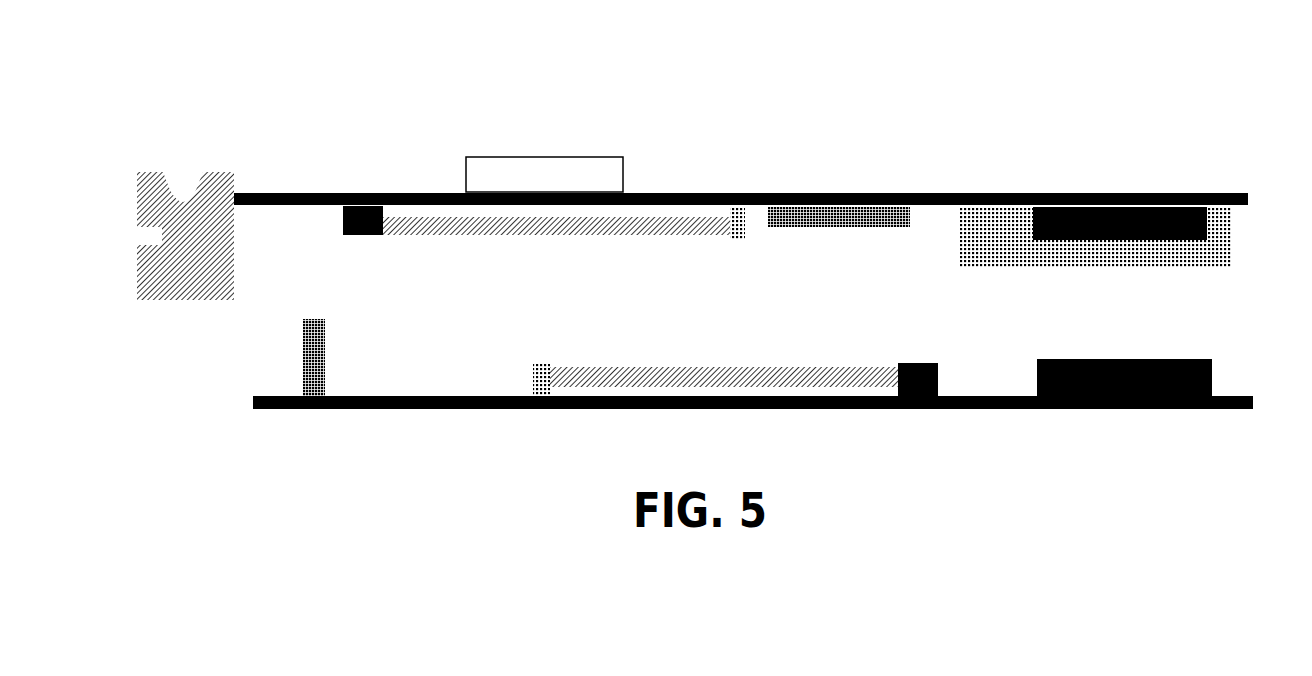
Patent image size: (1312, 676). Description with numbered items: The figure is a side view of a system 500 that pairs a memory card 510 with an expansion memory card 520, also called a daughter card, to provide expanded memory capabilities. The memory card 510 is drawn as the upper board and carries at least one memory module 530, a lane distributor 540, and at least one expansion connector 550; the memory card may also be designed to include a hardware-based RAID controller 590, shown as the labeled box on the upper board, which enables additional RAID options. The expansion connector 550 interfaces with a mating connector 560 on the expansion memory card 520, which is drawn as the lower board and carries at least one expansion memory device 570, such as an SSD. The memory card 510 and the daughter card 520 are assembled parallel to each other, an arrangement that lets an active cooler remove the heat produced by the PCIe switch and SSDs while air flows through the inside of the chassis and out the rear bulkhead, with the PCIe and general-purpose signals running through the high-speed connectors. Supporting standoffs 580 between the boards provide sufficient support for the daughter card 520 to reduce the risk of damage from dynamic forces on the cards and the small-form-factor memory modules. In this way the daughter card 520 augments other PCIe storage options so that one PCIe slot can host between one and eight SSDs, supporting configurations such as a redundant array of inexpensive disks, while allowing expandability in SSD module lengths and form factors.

The system 500 is at (1190, 62).
The memory card 510 is at (775, 193).
The expansion memory card 520 is at (800, 409).
The memory module 530 is at (635, 235).
The lane distributor 540 is at (847, 227).
The expansion connector 550 is at (1207, 226).
The mating connector 560 is at (1212, 380).
The expansion memory device 570 is at (767, 367).
The supporting standoffs 580 is at (325, 360).
The hardware-based RAID controller 590 is at (545, 157).